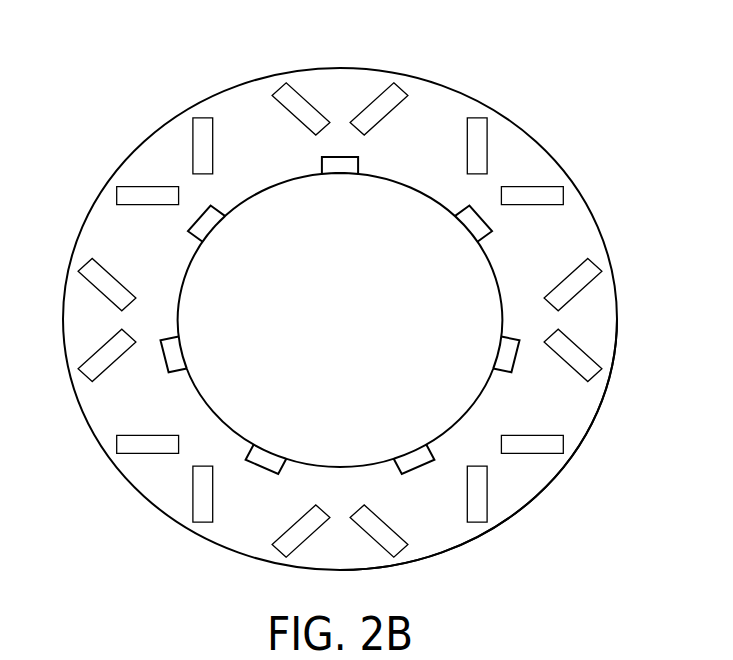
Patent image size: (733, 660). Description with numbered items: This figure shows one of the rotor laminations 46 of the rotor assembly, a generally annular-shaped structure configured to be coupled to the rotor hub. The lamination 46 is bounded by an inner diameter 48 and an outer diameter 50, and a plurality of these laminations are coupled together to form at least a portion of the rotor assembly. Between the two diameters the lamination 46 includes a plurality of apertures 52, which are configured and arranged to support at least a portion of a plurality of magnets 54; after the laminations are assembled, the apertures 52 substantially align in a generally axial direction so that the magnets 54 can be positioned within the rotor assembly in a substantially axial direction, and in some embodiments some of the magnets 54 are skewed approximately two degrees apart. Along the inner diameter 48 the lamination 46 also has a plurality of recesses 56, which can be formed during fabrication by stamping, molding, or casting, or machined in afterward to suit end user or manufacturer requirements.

The rotor laminations 46 is at (468, 95).
The inner diameter 48 is at (491, 263).
The outer diameter 50 is at (614, 278).
The apertures 52 is at (193, 117).
The magnets 54 is at (213, 137).
The recesses 56 is at (343, 157).